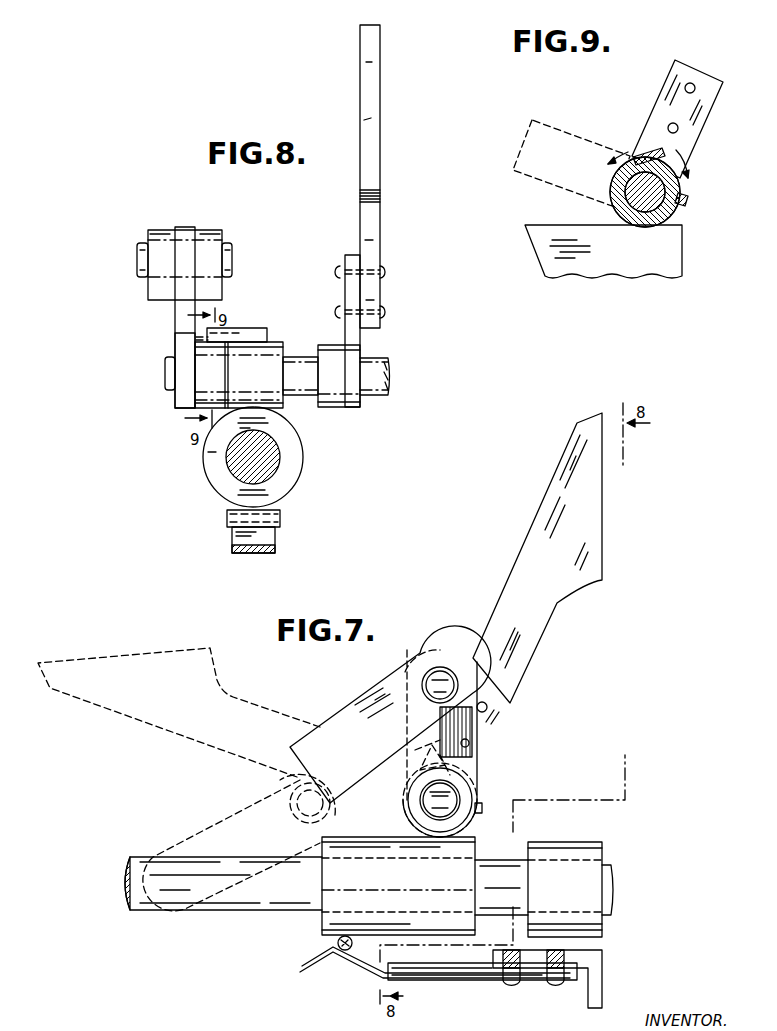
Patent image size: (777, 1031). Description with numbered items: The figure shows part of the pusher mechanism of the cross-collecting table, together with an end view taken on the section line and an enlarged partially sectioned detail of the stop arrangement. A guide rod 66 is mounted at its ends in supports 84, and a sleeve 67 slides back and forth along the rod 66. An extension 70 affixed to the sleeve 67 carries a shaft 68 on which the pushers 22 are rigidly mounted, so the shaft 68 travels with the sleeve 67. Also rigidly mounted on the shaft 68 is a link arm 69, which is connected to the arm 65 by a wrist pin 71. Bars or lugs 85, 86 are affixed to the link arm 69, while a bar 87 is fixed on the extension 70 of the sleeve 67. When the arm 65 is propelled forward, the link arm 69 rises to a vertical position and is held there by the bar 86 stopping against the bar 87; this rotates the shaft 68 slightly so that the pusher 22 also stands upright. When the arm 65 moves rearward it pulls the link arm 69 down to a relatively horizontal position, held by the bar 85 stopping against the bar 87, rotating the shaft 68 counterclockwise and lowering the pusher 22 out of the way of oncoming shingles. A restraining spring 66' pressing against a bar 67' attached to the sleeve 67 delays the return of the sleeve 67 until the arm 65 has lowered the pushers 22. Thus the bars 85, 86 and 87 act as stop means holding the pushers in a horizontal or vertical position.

In FIG. 8, the pusher 22 is at (362, 101).
In FIG. 9, the pusher 22 is at (527, 135).
In FIG. 7, the pusher 22 is at (603, 555).
In FIG. 8, the arm 65 is at (167, 233).
In FIG. 7, the arm 65 is at (350, 712).
In FIG. 8, the guide rod 66 is at (283, 457).
In FIG. 7, the guide rod 66 is at (307, 886).
In FIG. 8, the restraining spring 66' is at (234, 541).
In FIG. 7, the restraining spring 66' is at (438, 975).
In FIG. 8, the sleeve 67 is at (238, 457).
In FIG. 7, the sleeve 67 is at (375, 888).
In FIG. 8, the bar 67' is at (234, 519).
In FIG. 7, the bar 67' is at (310, 952).
In FIG. 8, the shaft 68 is at (384, 371).
In FIG. 9, the shaft 68 is at (645, 205).
In FIG. 7, the shaft 68 is at (455, 797).
In FIG. 8, the link arm 69 is at (176, 322).
In FIG. 9, the link arm 69 is at (673, 214).
In FIG. 7, the link arm 69 is at (468, 757).
In FIG. 8, the extension 70 is at (282, 346).
In FIG. 8, the wrist pin 71 is at (233, 260).
In FIG. 7, the wrist pin 71 is at (440, 668).
In FIG. 7, the support 84 is at (602, 847).
In FIG. 8, the bar 85 is at (177, 380).
In FIG. 9, the bar 85 is at (688, 200).
In FIG. 7, the bar 85 is at (478, 766).
In FIG. 8, the bar 86 is at (198, 338).
In FIG. 9, the bar 86 is at (641, 150).
In FIG. 7, the bar 86 is at (425, 746).
In FIG. 8, the bar 87 is at (265, 328).
In FIG. 7, the bar 87 is at (439, 742).